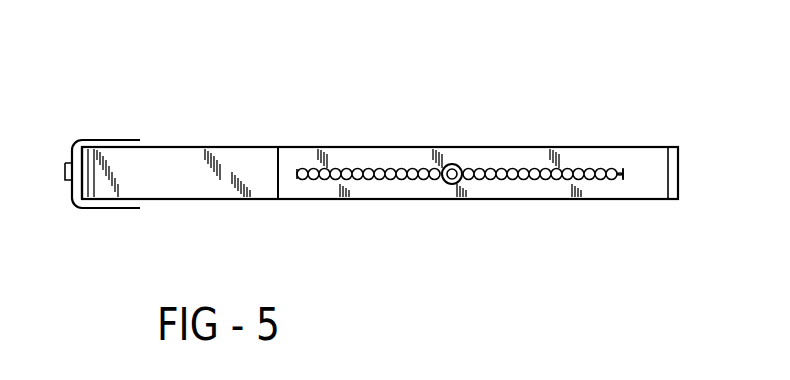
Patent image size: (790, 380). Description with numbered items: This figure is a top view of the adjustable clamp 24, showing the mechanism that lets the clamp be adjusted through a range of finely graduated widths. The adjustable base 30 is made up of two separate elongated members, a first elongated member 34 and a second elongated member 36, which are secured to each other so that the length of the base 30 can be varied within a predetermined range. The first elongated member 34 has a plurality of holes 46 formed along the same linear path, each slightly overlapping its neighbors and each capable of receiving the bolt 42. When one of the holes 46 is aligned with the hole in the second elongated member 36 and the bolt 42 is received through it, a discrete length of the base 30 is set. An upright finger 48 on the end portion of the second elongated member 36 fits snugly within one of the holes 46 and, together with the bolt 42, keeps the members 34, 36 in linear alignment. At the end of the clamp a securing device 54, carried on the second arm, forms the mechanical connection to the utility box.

The adjustable clamp 24 is at (308, 114).
The adjustable base 30 is at (438, 200).
The first elongated member 34 is at (616, 200).
The second elongated member 36 is at (186, 201).
The bolt 42 is at (450, 166).
The holes 46 is at (622, 170).
The upright finger 48 is at (486, 165).
The securing device 54 is at (72, 148).